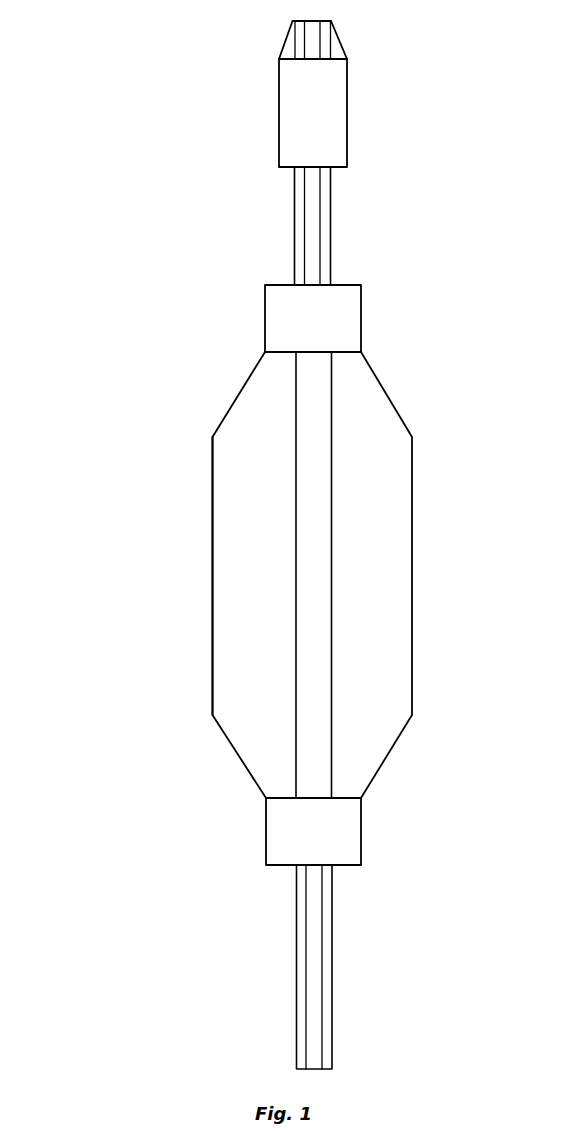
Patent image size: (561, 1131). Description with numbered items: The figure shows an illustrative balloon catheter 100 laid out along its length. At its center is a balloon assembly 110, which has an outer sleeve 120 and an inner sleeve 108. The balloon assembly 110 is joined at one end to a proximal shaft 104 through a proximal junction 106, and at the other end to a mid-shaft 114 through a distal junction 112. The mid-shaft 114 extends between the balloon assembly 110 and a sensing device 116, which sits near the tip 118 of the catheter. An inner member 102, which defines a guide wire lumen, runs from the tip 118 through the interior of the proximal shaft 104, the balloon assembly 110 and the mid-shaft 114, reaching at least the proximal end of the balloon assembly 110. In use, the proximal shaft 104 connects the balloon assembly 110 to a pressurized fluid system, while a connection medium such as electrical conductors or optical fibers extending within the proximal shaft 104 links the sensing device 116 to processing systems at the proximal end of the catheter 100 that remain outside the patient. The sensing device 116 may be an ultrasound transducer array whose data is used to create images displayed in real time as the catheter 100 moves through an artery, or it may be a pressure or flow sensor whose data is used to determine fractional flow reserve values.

The balloon catheter 100 is at (78, 123).
The inner member 102 is at (321, 234).
The proximal shaft 104 is at (296, 1018).
The proximal junction 106 is at (361, 829).
The inner sleeve 108 is at (332, 585).
The balloon assembly 110 is at (242, 507).
The distal junction 112 is at (265, 317).
The mid-shaft 114 is at (293, 213).
The sensing device 116 is at (347, 110).
The tip 118 is at (331, 21).
The outer sleeve 120 is at (212, 632).